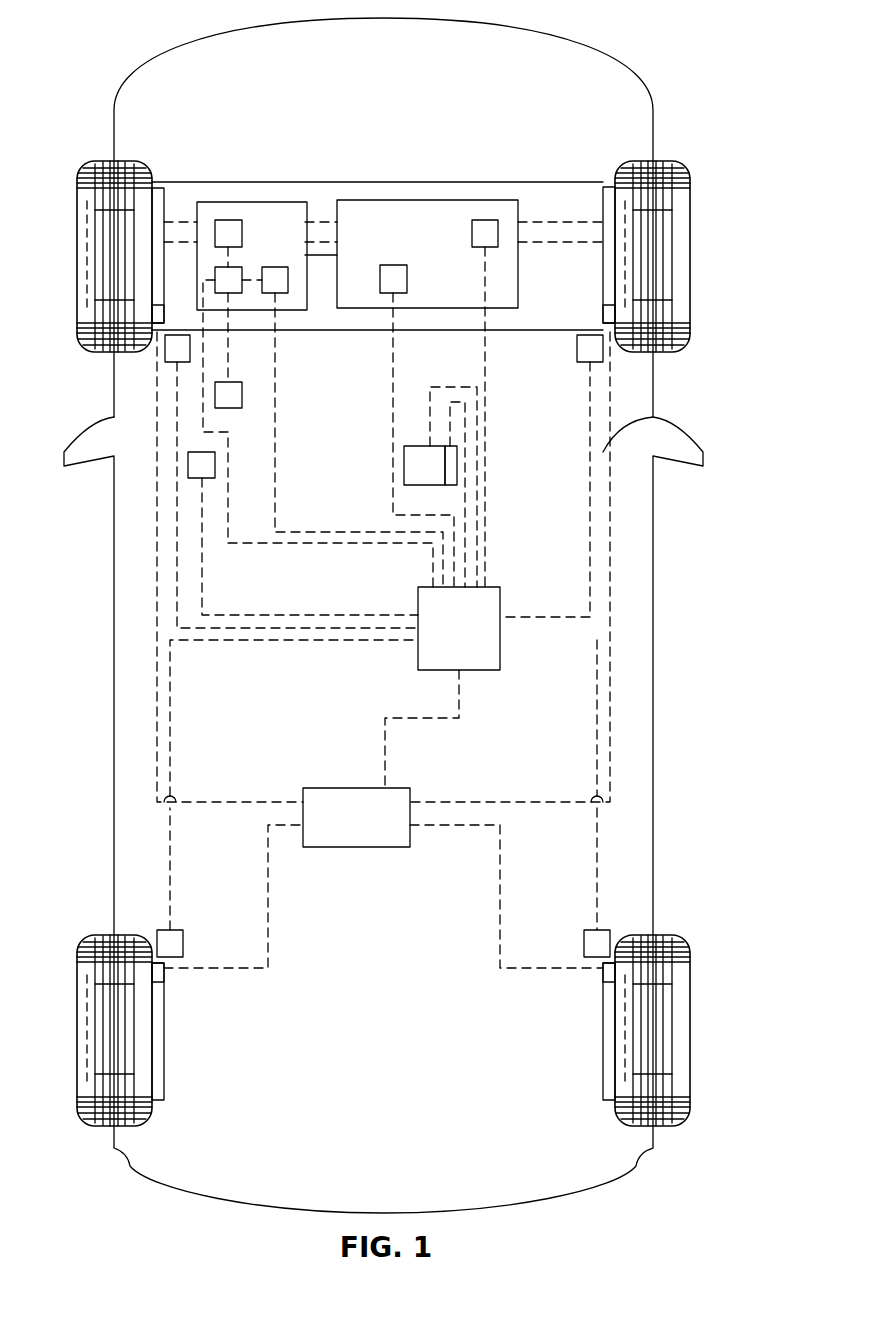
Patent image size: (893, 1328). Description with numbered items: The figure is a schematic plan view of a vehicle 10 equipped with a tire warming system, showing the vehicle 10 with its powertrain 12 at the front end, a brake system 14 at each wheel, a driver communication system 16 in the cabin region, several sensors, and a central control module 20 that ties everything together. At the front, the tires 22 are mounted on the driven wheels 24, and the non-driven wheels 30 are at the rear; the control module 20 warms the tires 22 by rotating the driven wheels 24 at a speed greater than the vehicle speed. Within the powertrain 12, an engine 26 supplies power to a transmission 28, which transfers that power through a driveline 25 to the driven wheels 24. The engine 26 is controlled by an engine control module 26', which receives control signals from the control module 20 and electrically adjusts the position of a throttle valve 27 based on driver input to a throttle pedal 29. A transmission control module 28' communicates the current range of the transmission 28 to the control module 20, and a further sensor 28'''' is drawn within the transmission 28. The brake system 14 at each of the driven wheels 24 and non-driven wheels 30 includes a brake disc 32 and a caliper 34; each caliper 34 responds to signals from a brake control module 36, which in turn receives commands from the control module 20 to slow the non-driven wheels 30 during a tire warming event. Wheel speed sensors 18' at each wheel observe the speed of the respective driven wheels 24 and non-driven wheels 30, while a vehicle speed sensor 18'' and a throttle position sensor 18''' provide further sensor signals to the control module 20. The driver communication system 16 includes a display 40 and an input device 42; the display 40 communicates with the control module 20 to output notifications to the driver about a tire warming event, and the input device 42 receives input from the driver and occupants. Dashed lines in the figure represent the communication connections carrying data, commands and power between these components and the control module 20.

The vehicle 10 is at (100, 38).
The powertrain 12 is at (540, 95).
The brake system 14 is at (565, 905).
The driver communication system 16 is at (410, 398).
The wheel speed sensors 18' is at (384, 646).
The vehicle speed sensor 18'' is at (236, 533).
The throttle position sensor 18''' is at (344, 397).
The control module 20 is at (500, 600).
The tires 22 is at (103, 165).
The driven wheels 24 is at (87, 237).
The driveline 25 is at (522, 222).
The engine 26 is at (250, 224).
The engine control module 26' is at (318, 427).
The throttle valve 27 is at (228, 220).
The transmission 28 is at (470, 223).
The transmission control module 28' is at (417, 410).
The output speed sensor 28'''' is at (516, 354).
The throttle pedal 29 is at (238, 408).
The non-driven wheels 30 is at (86, 1005).
The brake disc 32 is at (158, 188).
The caliper 34 is at (154, 306).
The brake control module 36 is at (410, 792).
The display 40 is at (404, 463).
The input device 42 is at (457, 463).